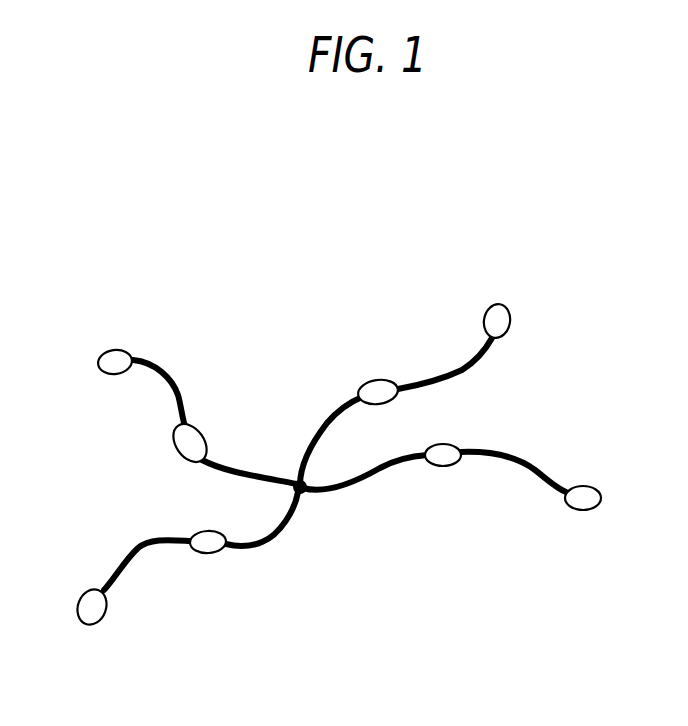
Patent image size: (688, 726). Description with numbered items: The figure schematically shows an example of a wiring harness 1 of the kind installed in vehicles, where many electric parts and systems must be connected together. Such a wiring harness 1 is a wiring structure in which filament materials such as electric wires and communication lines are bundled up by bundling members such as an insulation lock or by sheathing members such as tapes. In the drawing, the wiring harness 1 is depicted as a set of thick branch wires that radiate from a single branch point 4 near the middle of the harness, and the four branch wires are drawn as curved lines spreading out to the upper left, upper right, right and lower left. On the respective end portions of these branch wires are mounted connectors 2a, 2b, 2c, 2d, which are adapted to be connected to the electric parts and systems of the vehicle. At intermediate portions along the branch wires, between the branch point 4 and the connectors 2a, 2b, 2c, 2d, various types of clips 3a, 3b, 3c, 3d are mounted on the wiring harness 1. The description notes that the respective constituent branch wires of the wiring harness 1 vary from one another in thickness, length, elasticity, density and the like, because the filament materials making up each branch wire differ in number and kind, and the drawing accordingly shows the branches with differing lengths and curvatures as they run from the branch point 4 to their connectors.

The wiring harness 1 is at (175, 373).
The connector 2a is at (118, 348).
The connector 2b is at (590, 487).
The connector 2c is at (512, 320).
The connector 2d is at (80, 623).
The clip 3a is at (200, 432).
The clip 3b is at (452, 442).
The clip 3c is at (378, 380).
The clip 3d is at (213, 555).
The branch point 4 is at (305, 495).